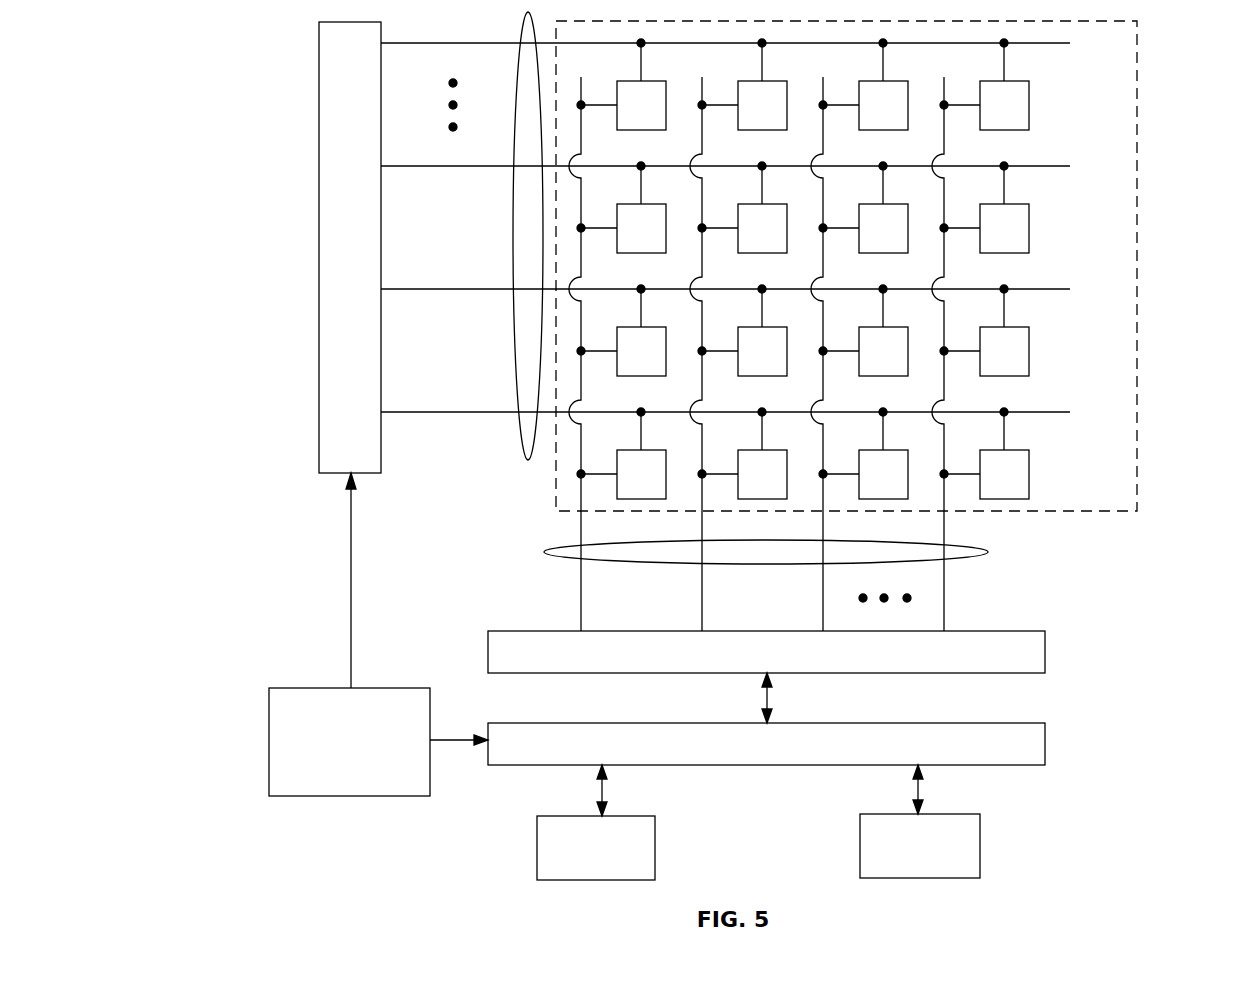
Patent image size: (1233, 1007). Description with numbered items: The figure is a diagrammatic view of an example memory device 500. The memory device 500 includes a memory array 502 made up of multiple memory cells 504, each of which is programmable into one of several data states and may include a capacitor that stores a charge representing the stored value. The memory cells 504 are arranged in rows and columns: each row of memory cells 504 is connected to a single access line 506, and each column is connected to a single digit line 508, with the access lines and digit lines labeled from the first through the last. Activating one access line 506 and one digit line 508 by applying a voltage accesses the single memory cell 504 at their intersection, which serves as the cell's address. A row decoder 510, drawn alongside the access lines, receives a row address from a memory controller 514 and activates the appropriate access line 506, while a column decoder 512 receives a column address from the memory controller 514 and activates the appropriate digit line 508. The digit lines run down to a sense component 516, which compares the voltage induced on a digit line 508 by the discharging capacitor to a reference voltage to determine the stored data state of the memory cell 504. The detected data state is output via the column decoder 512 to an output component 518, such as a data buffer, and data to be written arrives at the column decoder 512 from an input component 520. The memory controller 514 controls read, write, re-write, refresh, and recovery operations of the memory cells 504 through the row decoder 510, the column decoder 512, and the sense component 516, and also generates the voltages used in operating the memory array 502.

The memory device 500 is at (158, 42).
The memory array 502 is at (863, 326).
The memory cell 504 is at (1031, 228).
The access line 506 is at (526, 456).
The digit line 508 is at (988, 552).
The row decoder 510 is at (319, 377).
The column decoder 512 is at (1045, 755).
The memory controller 514 is at (350, 796).
The sense component 516 is at (1045, 664).
The output component 518 is at (980, 846).
The input component 520 is at (655, 832).